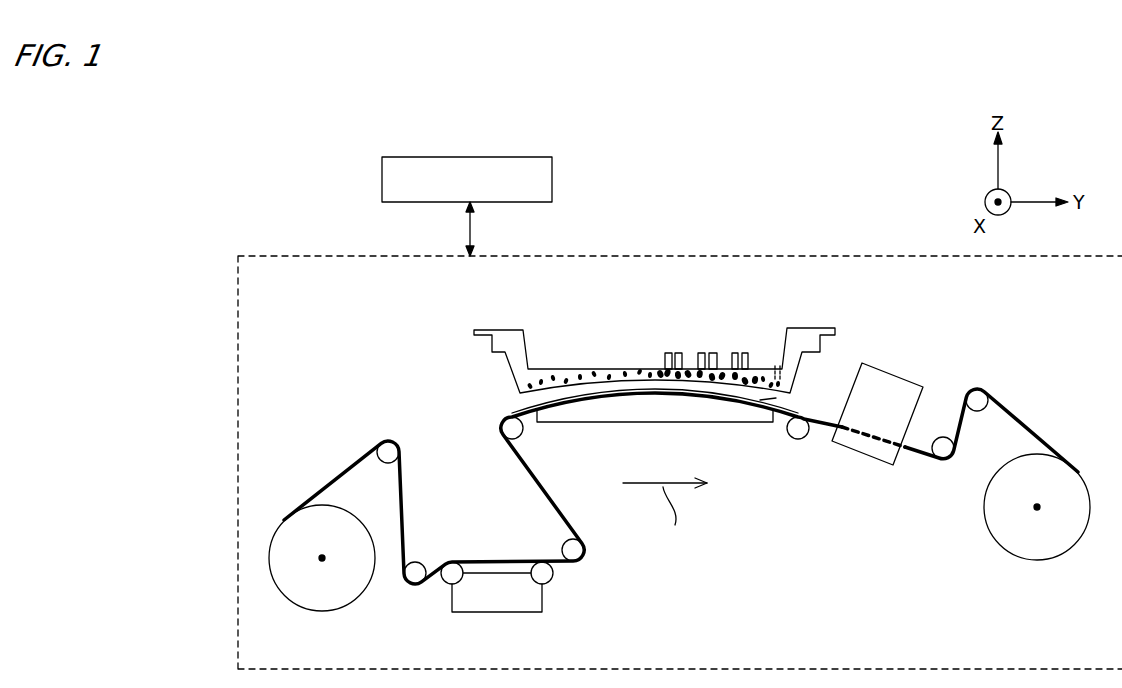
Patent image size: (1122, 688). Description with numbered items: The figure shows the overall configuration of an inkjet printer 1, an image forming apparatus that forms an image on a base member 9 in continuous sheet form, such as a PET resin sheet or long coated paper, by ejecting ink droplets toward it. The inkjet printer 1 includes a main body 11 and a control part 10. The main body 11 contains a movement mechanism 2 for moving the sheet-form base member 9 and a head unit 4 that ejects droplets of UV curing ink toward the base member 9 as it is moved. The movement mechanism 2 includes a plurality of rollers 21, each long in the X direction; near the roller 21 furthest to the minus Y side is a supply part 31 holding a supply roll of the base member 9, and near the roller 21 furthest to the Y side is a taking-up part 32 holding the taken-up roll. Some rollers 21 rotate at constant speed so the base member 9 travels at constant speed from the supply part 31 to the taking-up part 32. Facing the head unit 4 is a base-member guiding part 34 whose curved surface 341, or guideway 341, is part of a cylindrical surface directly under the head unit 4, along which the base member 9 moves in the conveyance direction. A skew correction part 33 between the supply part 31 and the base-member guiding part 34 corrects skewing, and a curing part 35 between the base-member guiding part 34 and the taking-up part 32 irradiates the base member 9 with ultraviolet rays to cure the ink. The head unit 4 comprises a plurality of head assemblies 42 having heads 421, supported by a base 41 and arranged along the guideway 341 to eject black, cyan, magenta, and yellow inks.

The inkjet printer 1 is at (800, 158).
The movement mechanism 2 is at (650, 614).
The head unit 4 is at (573, 318).
The base member 9 is at (520, 412).
The control part 10 is at (382, 185).
The main body 11 is at (705, 252).
The roller 21 is at (387, 448).
The supply part 31 is at (352, 621).
The taking-up part 32 is at (1042, 589).
The skew correction part 33 is at (493, 598).
The base-member guiding part 34 is at (652, 413).
The curved surface (guideway) 341 is at (762, 402).
The curing part 35 is at (890, 388).
The base 41 is at (588, 377).
The head assembly 42 is at (662, 267).
The head 421 is at (667, 363).